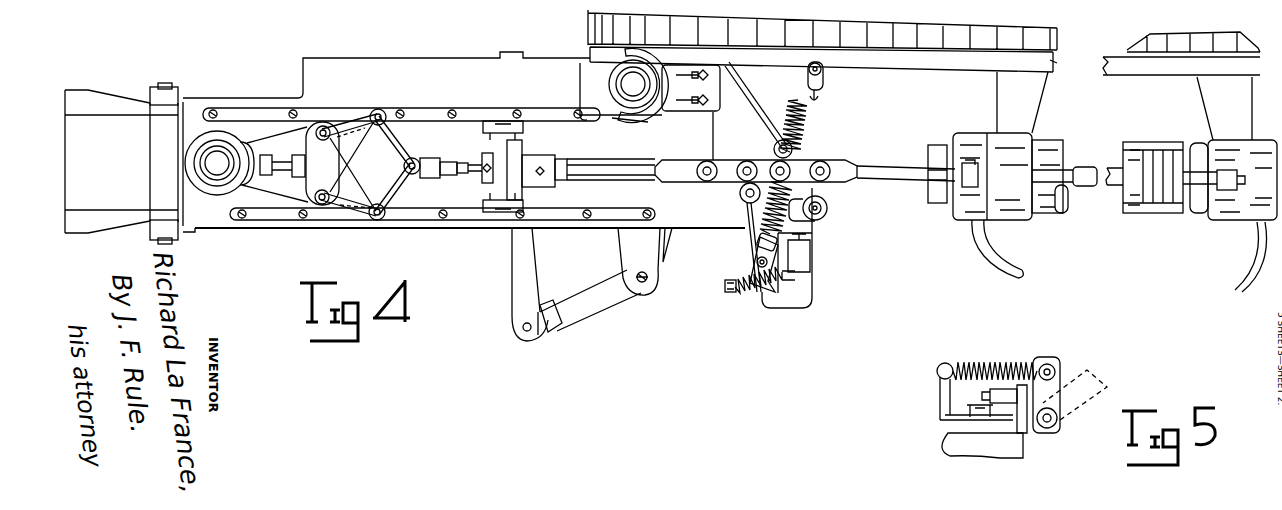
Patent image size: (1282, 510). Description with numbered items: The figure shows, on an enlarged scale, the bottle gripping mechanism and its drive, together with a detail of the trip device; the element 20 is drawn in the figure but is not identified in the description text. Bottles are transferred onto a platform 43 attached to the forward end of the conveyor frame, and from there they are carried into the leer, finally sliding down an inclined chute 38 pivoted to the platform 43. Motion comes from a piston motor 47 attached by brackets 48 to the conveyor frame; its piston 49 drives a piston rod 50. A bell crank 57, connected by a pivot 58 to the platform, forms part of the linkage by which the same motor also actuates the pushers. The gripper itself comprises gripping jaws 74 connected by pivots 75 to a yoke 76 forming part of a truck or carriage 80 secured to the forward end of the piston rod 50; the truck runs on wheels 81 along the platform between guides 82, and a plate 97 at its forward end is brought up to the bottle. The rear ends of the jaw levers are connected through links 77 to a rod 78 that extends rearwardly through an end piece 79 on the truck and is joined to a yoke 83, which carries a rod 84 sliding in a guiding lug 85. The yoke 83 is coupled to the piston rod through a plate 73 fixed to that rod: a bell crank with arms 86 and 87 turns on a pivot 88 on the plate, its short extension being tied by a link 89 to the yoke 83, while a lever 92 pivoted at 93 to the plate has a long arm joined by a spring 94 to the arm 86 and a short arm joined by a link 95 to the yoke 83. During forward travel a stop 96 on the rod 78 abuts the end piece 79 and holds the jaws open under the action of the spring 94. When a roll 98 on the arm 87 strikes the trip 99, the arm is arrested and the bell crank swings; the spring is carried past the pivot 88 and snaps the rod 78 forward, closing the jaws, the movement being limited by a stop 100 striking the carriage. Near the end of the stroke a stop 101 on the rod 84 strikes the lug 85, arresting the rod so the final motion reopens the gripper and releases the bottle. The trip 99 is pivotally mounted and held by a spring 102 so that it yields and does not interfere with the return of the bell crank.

In FIG. 4, the frame 20 is at (195, 145).
In FIG. 4, the inclined platform or chute 38 is at (110, 120).
In FIG. 4, the platform 43 is at (478, 230).
In FIG. 4, the piston motor 47 is at (1158, 143).
In FIG. 4, the brackets 48 is at (1032, 103).
In FIG. 4, the piston 49 is at (1143, 201).
In FIG. 4, the piston rod 50 is at (603, 181).
In FIG. 4, the bell crank 57 is at (590, 303).
In FIG. 4, the pivot 58 is at (644, 283).
In FIG. 4, the plate 73 is at (715, 122).
In FIG. 4, the gripping jaws 74 is at (247, 136).
In FIG. 4, the pivots 75 is at (325, 128).
In FIG. 4, the yoke 76 is at (330, 167).
In FIG. 4, the links 77 is at (398, 204).
In FIG. 4, the rod 78 is at (474, 158).
In FIG. 4, the end piece 79 is at (518, 146).
In FIG. 4, the truck or carriage 80 is at (422, 135).
In FIG. 4, the wheels 81 is at (490, 121).
In FIG. 4, the guides 82 is at (553, 116).
In FIG. 4, the yoke 83 is at (693, 162).
In FIG. 4, the rod 84 is at (906, 170).
In FIG. 4, the guiding lug 85 is at (966, 183).
In FIG. 4, the bell crank arm 86 is at (750, 233).
In FIG. 4, the bell crank arm 87 is at (818, 224).
In FIG. 4, the pivot 88 is at (748, 198).
In FIG. 4, the link 89 is at (727, 167).
In FIG. 4, the lever 92 is at (812, 98).
In FIG. 4, the pivot 93 is at (780, 141).
In FIG. 4, the spring 94 is at (808, 127).
In FIG. 4, the link 95 is at (818, 162).
In FIG. 4, the stop 96 is at (482, 180).
In FIG. 4, the plate 97 is at (238, 188).
In FIG. 4, the roll 98 is at (828, 208).
In FIG. 4, the trip 99 is at (810, 261).
In FIG. 5, the trip 99 is at (1053, 378).
In FIG. 4, the stop 100 is at (542, 181).
In FIG. 4, the stop 101 is at (1228, 192).
In FIG. 4, the spring 102 is at (757, 289).
In FIG. 5, the spring 102 is at (990, 366).